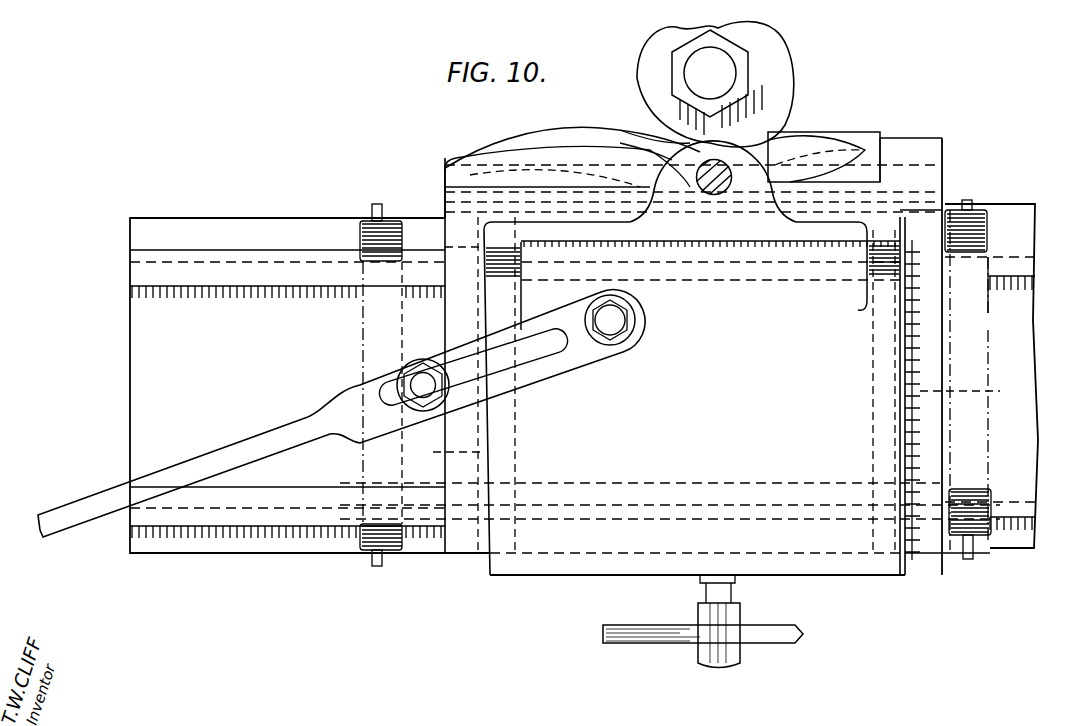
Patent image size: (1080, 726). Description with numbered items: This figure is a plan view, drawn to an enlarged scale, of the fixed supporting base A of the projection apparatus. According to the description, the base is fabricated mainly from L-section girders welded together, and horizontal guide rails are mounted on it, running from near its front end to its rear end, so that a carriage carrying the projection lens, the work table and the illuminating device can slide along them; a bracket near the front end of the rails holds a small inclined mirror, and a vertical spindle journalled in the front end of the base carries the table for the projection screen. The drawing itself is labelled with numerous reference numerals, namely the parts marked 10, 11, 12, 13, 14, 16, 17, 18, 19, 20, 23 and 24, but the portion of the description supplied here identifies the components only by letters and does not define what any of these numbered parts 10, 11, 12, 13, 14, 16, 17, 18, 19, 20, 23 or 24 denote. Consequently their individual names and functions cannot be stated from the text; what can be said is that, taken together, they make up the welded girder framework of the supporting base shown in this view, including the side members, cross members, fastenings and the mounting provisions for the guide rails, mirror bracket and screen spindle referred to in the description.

The side plate 10 is at (157, 364).
The graduated rack band 11 is at (140, 276).
The cross rail 12 is at (468, 545).
The cam 13 is at (775, 75).
The pivot boss 14 is at (778, 126).
The tie rod 16 is at (719, 424).
The housing frame 17 is at (533, 557).
The knurled adjusting nut 18 is at (360, 343).
The cover plate 19 is at (590, 145).
The cam lobe 20 is at (512, 140).
The clamp bar 23 is at (790, 632).
The operating lever 24 is at (285, 435).